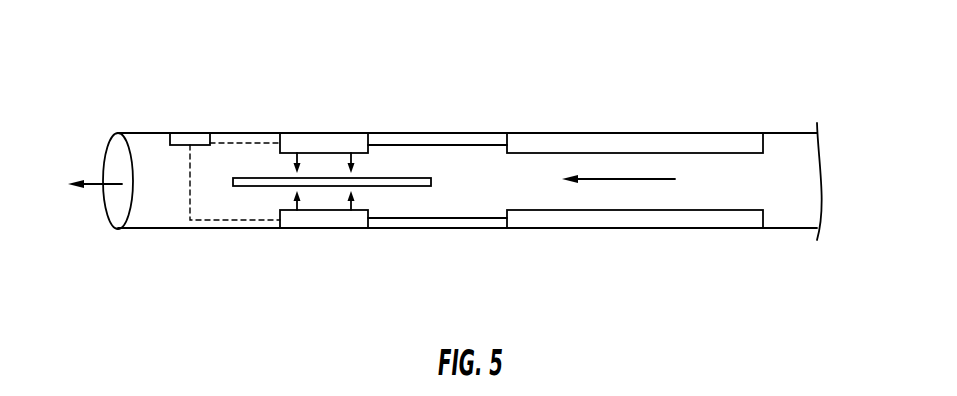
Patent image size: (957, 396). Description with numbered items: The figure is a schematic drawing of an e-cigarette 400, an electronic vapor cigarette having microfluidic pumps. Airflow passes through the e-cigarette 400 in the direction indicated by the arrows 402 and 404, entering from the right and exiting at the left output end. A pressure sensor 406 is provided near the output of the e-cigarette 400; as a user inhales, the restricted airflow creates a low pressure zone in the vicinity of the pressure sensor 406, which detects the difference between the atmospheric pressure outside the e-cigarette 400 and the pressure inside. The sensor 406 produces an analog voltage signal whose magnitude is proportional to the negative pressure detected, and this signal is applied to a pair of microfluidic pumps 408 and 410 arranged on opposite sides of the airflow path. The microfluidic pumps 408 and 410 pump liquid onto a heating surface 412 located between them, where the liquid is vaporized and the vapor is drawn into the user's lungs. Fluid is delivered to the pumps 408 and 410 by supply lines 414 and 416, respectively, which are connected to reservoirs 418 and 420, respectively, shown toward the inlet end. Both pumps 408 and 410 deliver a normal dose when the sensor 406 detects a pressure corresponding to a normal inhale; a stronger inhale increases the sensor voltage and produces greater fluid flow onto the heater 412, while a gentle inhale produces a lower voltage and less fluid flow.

The e-cigarette 400 is at (327, 78).
The arrow 402 is at (88, 188).
The arrow 404 is at (648, 179).
The pressure sensor 406 is at (185, 133).
The microfluidic pump 408 is at (332, 142).
The microfluidic pump 410 is at (322, 225).
The heating surface 412 is at (247, 184).
The supply line 414 is at (463, 145).
The supply line 416 is at (440, 218).
The reservoir 418 is at (675, 145).
The reservoir 420 is at (594, 217).